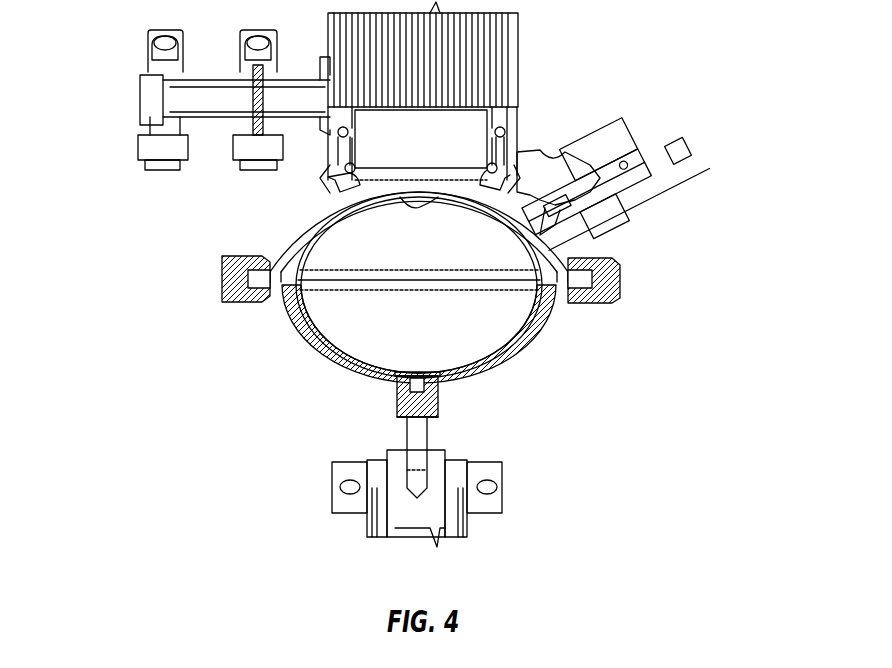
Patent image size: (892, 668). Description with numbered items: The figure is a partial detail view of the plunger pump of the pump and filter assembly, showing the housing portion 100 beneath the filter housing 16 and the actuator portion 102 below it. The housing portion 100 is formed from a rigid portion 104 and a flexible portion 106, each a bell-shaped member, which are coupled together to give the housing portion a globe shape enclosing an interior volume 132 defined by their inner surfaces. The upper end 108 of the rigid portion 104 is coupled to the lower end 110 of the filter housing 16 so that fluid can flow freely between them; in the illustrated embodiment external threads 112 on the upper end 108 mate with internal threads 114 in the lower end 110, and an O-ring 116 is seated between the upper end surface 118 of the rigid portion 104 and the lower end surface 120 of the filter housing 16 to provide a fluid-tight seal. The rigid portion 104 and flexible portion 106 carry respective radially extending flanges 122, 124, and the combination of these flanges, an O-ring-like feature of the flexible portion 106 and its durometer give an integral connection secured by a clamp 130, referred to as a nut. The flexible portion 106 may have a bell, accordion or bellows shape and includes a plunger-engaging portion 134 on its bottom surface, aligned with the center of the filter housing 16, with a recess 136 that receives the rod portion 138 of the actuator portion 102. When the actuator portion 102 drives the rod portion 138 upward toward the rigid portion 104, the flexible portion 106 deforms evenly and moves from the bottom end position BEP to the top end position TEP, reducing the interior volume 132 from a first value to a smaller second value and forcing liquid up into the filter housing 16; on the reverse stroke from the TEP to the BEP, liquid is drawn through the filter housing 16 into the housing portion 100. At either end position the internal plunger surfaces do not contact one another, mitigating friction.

The housing portion 100 is at (162, 295).
The filter housing 16 is at (510, 27).
The lower end surface 120 is at (502, 128).
The O-ring 116 is at (493, 160).
The upper end surface 118 is at (503, 157).
The upper end 108 is at (508, 175).
The internal threads 114 is at (598, 158).
The top end position TEP is at (660, 190).
The lower end 110 is at (327, 163).
The external threads 112 is at (340, 168).
The rigid portion 104 is at (295, 215).
The flexible portion 106 is at (533, 342).
The radially extending flange 122 is at (548, 265).
The clamp 130 is at (622, 288).
The radially extending flange 124 is at (578, 298).
The interior volume 132 is at (445, 345).
The plunger-engaging portion 134 is at (440, 405).
The recess 136 is at (400, 418).
The bottom end position BEP is at (322, 357).
The rod portion 138 is at (430, 433).
The actuator portion 102 is at (520, 511).